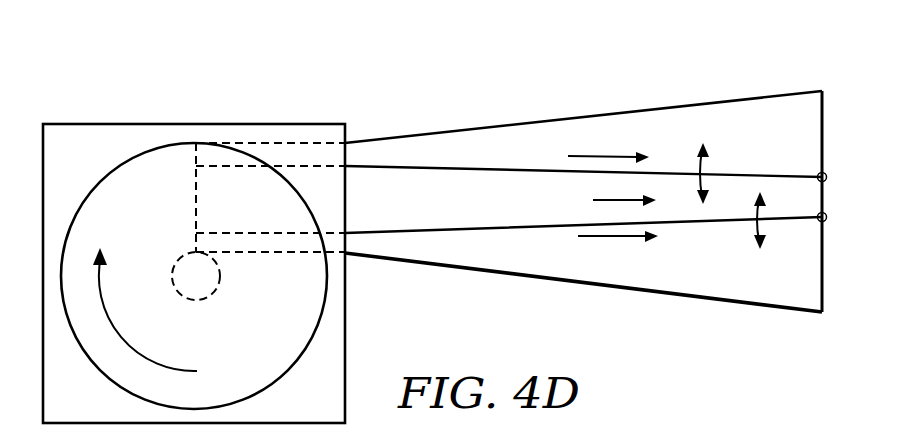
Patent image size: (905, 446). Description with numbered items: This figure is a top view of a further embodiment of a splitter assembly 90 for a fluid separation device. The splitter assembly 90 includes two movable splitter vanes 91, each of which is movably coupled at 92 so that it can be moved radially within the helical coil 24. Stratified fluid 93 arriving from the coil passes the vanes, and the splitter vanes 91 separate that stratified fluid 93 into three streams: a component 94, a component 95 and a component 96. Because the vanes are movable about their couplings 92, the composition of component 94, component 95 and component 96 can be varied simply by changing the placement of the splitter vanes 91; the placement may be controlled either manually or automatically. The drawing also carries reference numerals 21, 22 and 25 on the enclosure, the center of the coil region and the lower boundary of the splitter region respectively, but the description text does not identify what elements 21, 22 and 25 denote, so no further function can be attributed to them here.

The housing 21 is at (75, 125).
The rotation axis 22 is at (177, 262).
The helical coil 24 is at (113, 202).
The optical path boundary 25 is at (495, 275).
The splitter assembly 90 is at (441, 81).
The splitter vanes 91 is at (422, 231).
The movable coupling 92 is at (827, 178).
The stratified fluid 93 is at (150, 356).
The component 94 is at (586, 155).
The component 95 is at (593, 201).
The component 96 is at (587, 238).